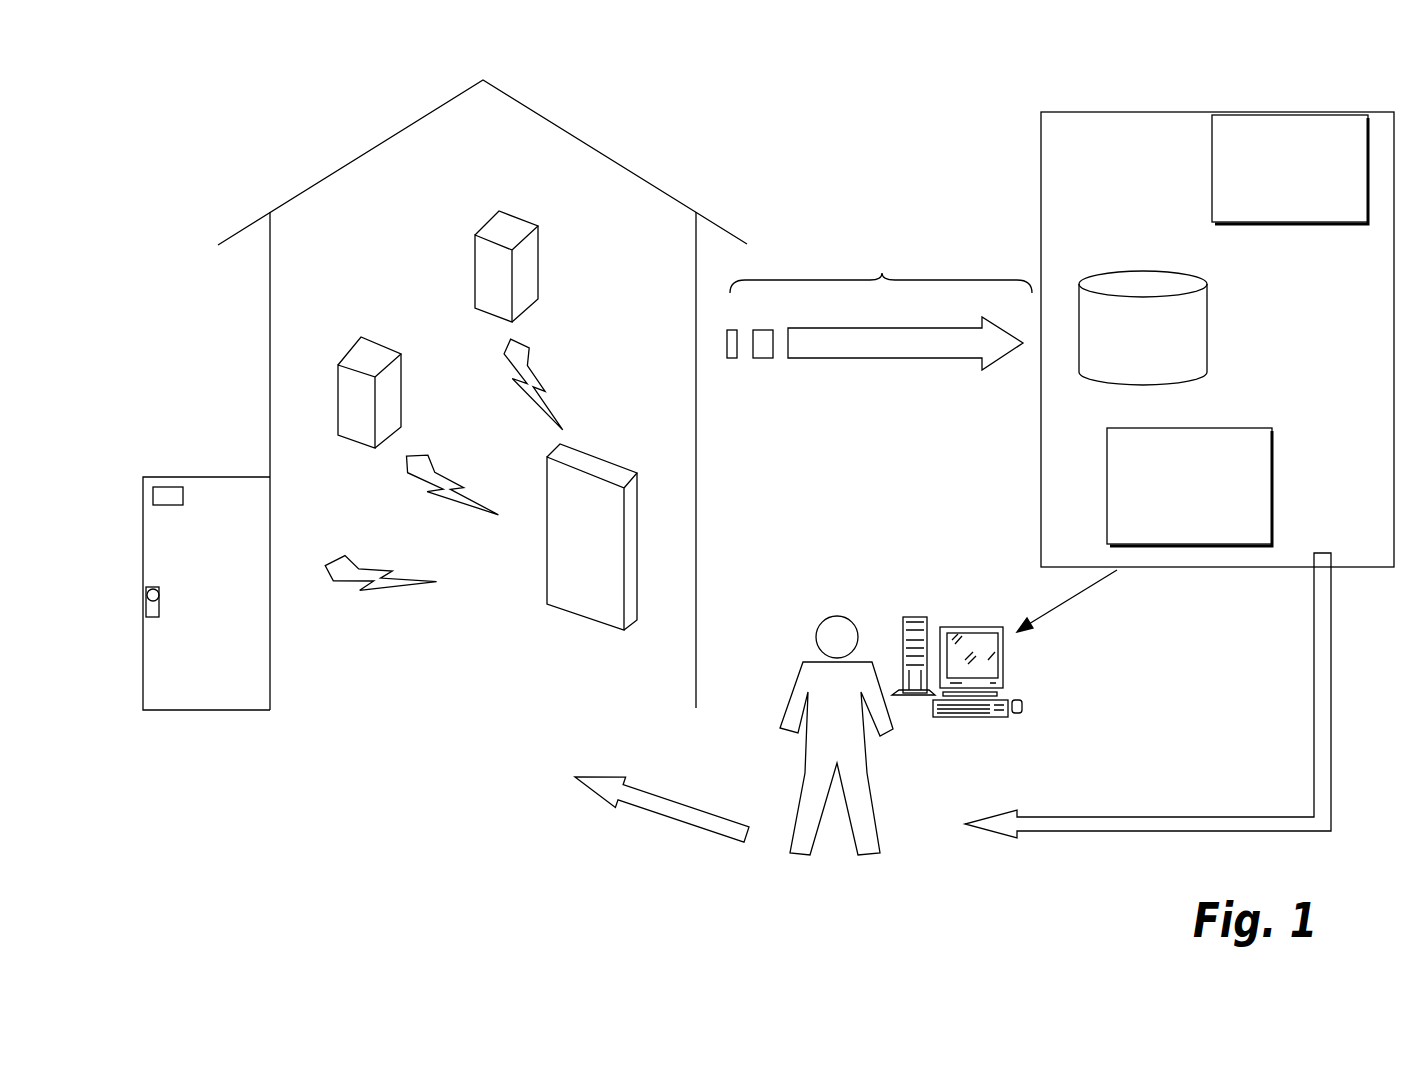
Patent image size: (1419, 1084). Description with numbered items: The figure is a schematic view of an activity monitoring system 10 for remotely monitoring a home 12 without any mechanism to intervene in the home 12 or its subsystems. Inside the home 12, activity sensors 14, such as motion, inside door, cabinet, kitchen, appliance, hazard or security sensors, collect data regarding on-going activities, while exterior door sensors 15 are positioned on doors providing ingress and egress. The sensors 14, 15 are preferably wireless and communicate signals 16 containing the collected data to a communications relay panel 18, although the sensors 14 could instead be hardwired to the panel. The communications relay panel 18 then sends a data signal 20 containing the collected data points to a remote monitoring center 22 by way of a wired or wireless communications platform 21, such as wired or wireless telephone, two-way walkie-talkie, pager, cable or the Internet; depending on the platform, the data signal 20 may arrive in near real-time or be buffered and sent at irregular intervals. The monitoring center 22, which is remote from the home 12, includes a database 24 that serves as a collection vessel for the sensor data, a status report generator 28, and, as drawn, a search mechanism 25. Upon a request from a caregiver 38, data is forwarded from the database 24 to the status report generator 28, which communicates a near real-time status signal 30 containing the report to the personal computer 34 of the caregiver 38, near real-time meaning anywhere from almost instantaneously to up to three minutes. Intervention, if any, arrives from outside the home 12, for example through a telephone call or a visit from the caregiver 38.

The activity monitoring system 10 is at (228, 143).
The home 12 is at (557, 127).
The activity sensors 14 is at (470, 263).
The exterior door sensors 15 is at (167, 490).
The signals 16 is at (545, 376).
The communications relay panel 18 is at (595, 551).
The data signal 20 is at (918, 357).
The communications platform 21 is at (881, 264).
The remote monitoring center 22 is at (1041, 170).
The database 24 is at (1130, 364).
The search mechanism 25 is at (1277, 209).
The status report generator 28 is at (1176, 527).
The near real-time status signal 30 is at (1093, 588).
The personal computer 34 is at (952, 627).
The caregiver 38 is at (873, 807).